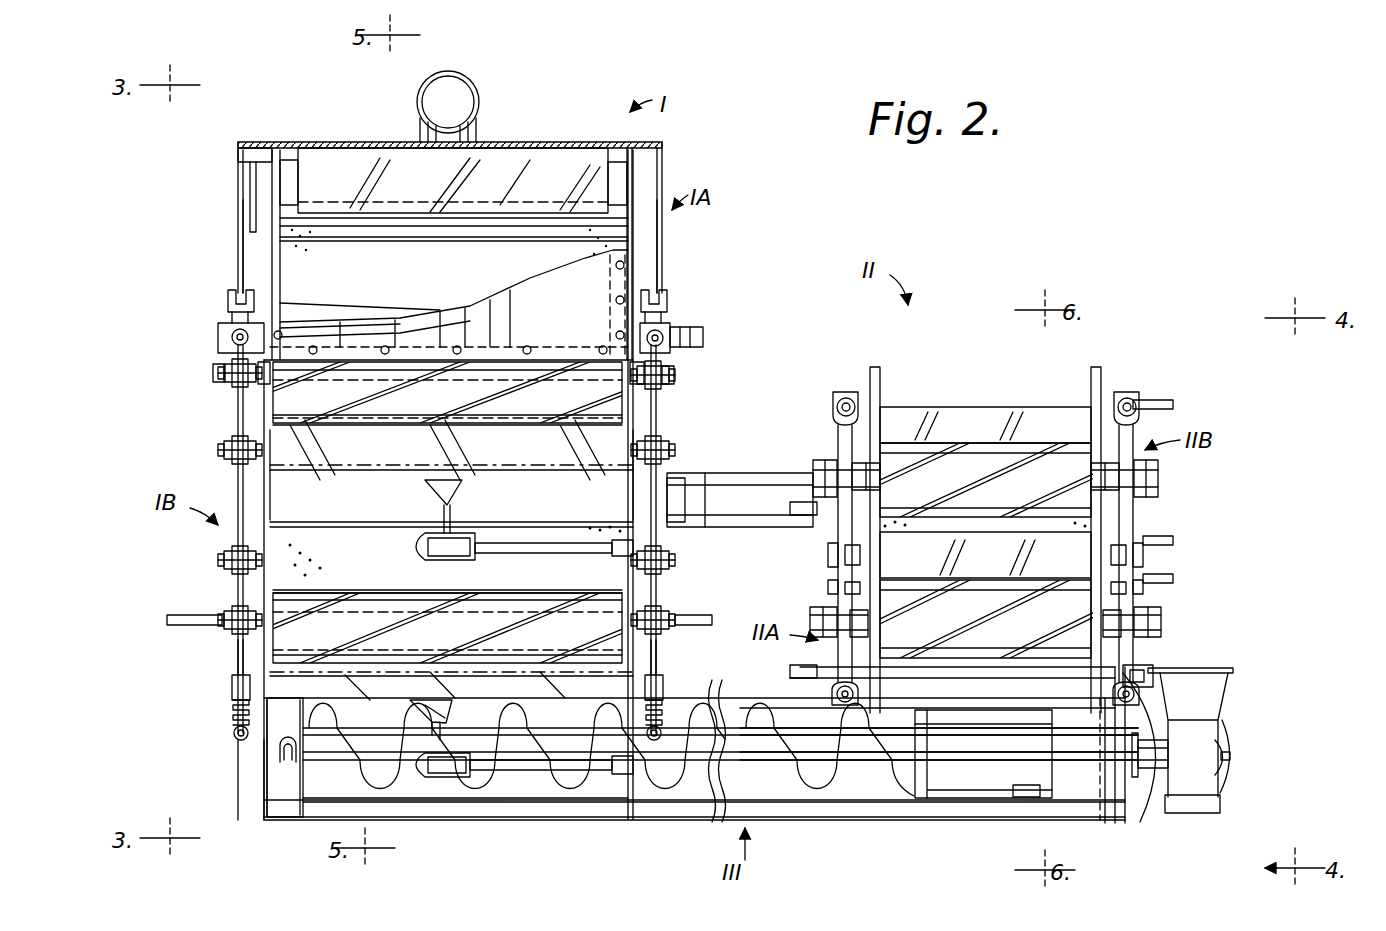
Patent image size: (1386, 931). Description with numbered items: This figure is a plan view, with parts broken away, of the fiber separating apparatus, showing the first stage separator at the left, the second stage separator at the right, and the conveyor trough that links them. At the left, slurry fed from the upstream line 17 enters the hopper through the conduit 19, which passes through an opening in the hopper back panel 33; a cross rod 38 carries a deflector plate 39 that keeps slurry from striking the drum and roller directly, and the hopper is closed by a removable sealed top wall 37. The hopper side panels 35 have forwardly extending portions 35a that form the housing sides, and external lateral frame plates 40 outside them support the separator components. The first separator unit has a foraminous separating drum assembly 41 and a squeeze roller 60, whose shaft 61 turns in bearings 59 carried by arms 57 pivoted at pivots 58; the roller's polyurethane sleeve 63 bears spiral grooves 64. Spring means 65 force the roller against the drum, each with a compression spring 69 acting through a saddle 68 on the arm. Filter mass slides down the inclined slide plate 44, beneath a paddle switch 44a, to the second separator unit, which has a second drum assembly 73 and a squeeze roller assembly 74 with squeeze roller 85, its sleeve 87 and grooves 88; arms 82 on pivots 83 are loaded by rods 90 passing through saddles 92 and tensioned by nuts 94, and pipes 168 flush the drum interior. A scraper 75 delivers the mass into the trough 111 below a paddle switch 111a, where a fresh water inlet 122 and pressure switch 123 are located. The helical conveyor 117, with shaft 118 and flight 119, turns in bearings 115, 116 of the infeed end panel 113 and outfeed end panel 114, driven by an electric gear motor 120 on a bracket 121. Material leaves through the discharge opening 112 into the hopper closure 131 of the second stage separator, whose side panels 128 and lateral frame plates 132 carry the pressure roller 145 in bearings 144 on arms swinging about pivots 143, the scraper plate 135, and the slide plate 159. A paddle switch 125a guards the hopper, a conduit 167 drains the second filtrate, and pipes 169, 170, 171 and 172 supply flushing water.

The pipe 17 is at (456, 72).
The conduit 19 is at (478, 132).
The hopper back panel 33 is at (558, 140).
The cross rod 38 is at (283, 150).
The deflector plate 39 is at (378, 165).
The side panels 35 is at (640, 175).
The external lateral frame plates 40 is at (660, 238).
The foraminous separating drum assembly 41 is at (430, 284).
The sealed top wall 37 is at (580, 322).
The polyurethane sleeve 63 is at (420, 356).
The saddle 68 is at (262, 302).
The means for forcing the squeeze roller 65 is at (222, 300).
The compression spring 69 is at (216, 320).
The bearings 59 is at (225, 366).
The shaft 61 is at (213, 373).
The arms 57 is at (238, 412).
The pivots 58 is at (218, 456).
The grooves 64 is at (485, 395).
The squeeze roller 60 is at (360, 432).
The inclined slide plate 44 is at (530, 454).
The forwardly extending portions 35a is at (272, 490).
The paddle switch 44a is at (424, 492).
The second foraminous separator drum assembly 73 is at (330, 559).
The squeeze roller 85 is at (416, 548).
The polyurethane sleeve 87 is at (430, 600).
The squeeze roller assembly 74 is at (505, 592).
The grooves 88 is at (520, 632).
The scraper 75 is at (451, 689).
The paddle switch 111a is at (450, 708).
The shaft 118 is at (380, 750).
The pressure switch 123 is at (325, 752).
The inlet 122 is at (284, 770).
The infeed end panel 113 is at (262, 800).
The bearing 115 is at (238, 770).
The trough 111 is at (500, 818).
The helical conveyor 117 is at (578, 795).
The pivots 83 is at (218, 562).
The pipes 168 is at (178, 615).
The arms 82 is at (238, 662).
The saddle 92 is at (232, 685).
The nut 94 is at (230, 715).
The rod 90 is at (234, 738).
The conduit 167 is at (738, 475).
The side panels 128 is at (868, 372).
The slide plate 159 is at (972, 405).
The pressure roller 145 is at (905, 600).
The scraper plate 135 is at (985, 555).
The hopper closure 131 is at (975, 688).
The pivots 143 is at (828, 552).
The pipe 170 is at (1173, 406).
The pipe 171 is at (1173, 542).
The pipe 169 is at (1173, 578).
The lateral frame plates 132 is at (828, 587).
The bearings 144 is at (810, 616).
The pipe 172 is at (1153, 670).
The flight 119 is at (800, 742).
The discharge opening 112 is at (938, 780).
The paddle switch 125a is at (1025, 797).
The outfeed end panel 114 is at (1125, 824).
The bearing 116 is at (1145, 782).
The electric gear motor 120 is at (1215, 732).
The bracket 121 is at (1215, 776).